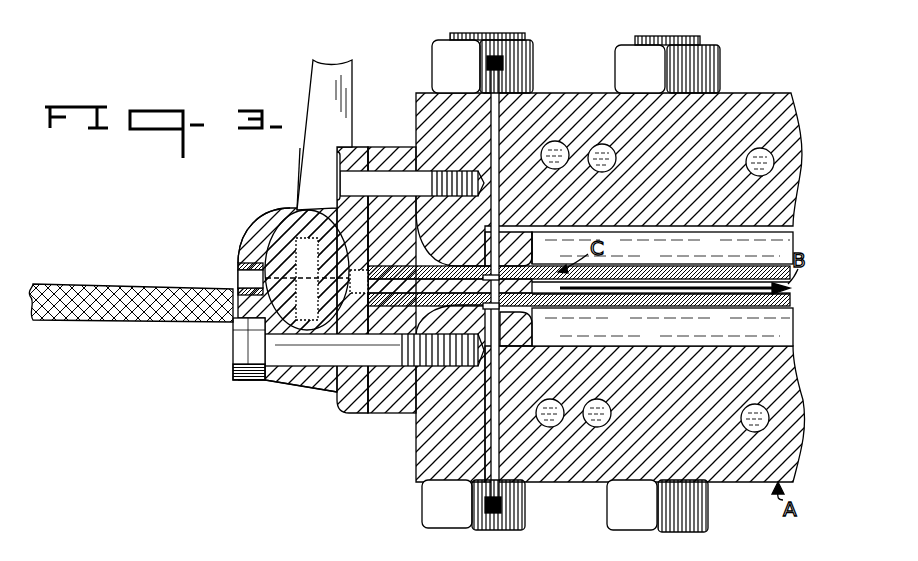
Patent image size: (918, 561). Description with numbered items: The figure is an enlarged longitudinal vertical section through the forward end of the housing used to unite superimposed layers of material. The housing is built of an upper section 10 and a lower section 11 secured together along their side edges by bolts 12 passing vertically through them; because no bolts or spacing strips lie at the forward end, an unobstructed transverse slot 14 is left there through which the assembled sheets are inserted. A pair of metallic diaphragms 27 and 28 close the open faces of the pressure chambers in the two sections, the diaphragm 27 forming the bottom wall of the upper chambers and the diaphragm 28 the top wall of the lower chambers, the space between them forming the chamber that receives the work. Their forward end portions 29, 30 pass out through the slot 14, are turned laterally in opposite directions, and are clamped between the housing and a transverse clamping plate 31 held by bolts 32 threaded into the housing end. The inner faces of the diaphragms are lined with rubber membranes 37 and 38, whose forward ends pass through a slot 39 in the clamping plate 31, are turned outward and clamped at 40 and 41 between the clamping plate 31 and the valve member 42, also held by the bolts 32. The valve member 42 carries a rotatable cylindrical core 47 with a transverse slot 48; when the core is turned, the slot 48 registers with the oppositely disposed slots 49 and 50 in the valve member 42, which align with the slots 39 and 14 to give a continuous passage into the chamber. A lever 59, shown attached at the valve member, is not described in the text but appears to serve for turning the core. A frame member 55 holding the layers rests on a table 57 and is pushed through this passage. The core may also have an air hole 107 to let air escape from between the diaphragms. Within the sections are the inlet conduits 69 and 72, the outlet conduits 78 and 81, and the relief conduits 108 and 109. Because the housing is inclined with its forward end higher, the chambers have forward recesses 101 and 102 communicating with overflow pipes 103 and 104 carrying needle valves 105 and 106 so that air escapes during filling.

The upper section 10 is at (762, 100).
The lower section 11 is at (736, 481).
The bolts 12 is at (527, 34).
The slot 14 is at (413, 447).
The diaphragm 27 is at (630, 267).
The diaphragm 28 is at (661, 307).
The forward end portion 29 is at (398, 170).
The forward end portion 30 is at (409, 416).
The clamping plate 31 is at (383, 414).
The bolts 32 is at (306, 389).
The membrane 37 is at (743, 272).
The membrane 38 is at (729, 308).
The slot 39 is at (297, 210).
The clamped portion 40 is at (290, 216).
The clamped portion 41 is at (357, 413).
The valve member 42 is at (261, 382).
The core 47 is at (310, 257).
The slot 48 is at (250, 228).
The slot 49 is at (246, 278).
The slot 50 is at (340, 398).
The frame member 55 is at (533, 268).
The table 57 is at (123, 322).
The lever 59 is at (320, 76).
The conduit 69 is at (553, 428).
The conduit 72 is at (556, 142).
The conduit 78 is at (597, 428).
The conduit 81 is at (603, 145).
The recess 101 is at (503, 225).
The recess 102 is at (518, 313).
The overflow pipe 103 is at (495, 112).
The overflow pipe 104 is at (433, 481).
The needle valve 105 is at (495, 58).
The needle valve 106 is at (487, 510).
The air hole 107 is at (245, 345).
The conduit 108 is at (752, 148).
The conduit 109 is at (750, 436).